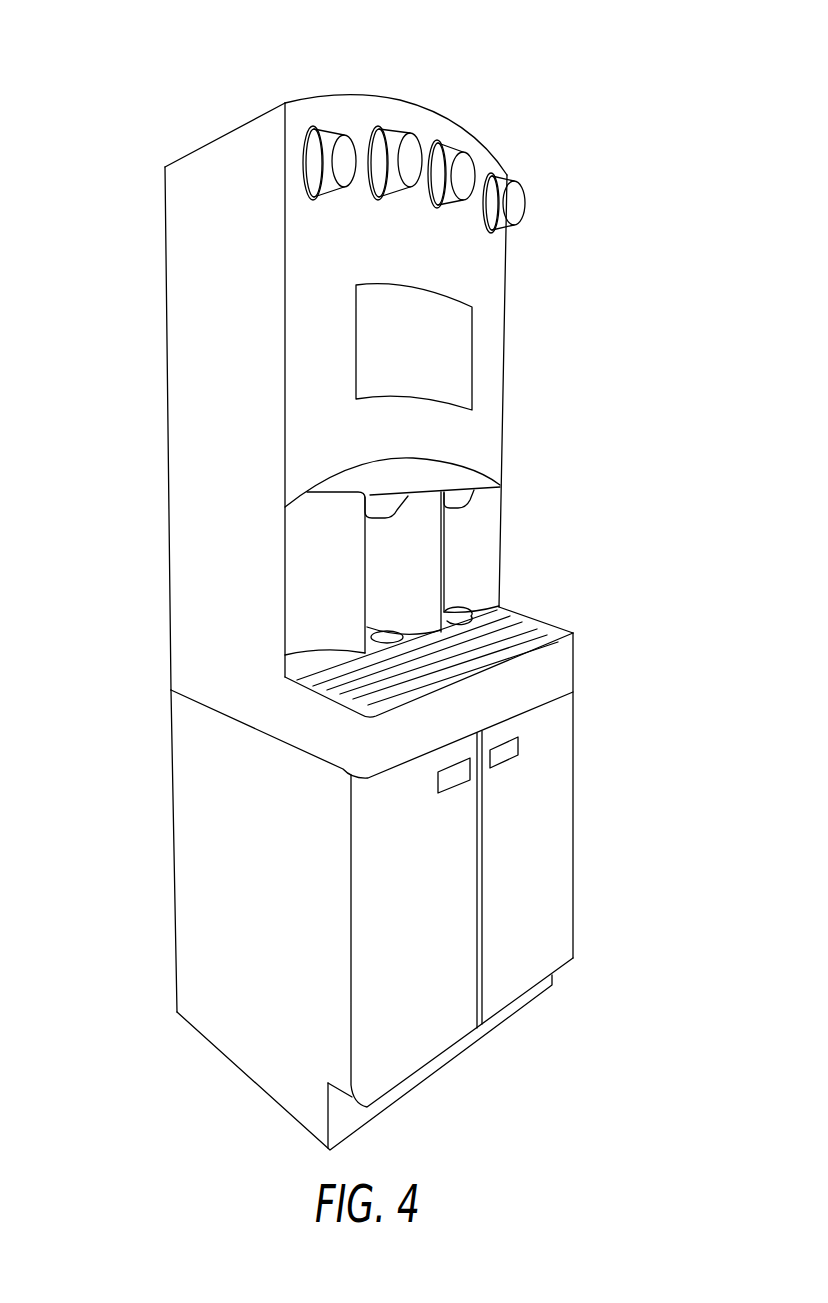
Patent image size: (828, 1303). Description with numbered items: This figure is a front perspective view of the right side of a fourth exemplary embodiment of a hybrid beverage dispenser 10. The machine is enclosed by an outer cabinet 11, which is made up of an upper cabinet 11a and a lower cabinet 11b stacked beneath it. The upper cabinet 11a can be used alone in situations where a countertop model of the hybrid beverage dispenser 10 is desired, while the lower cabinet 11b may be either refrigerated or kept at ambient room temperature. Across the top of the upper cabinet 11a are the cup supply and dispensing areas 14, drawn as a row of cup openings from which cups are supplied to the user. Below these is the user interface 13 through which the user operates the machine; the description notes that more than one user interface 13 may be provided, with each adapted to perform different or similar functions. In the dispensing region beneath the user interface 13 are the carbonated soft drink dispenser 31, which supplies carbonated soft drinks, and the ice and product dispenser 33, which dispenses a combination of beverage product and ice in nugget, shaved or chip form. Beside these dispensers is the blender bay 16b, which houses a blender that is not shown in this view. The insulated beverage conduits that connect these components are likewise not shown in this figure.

The hybrid beverage dispenser 10 is at (371, 588).
The outer cabinet 11 is at (356, 588).
The upper cabinet 11a is at (170, 590).
The lower cabinet 11b is at (558, 842).
The user interface 13 is at (440, 334).
The cup supply and dispensing areas 14 is at (318, 157).
The blender bay 16b is at (325, 597).
The carbonated soft drink dispenser 31 is at (455, 495).
The ice and product dispenser 33 is at (370, 498).